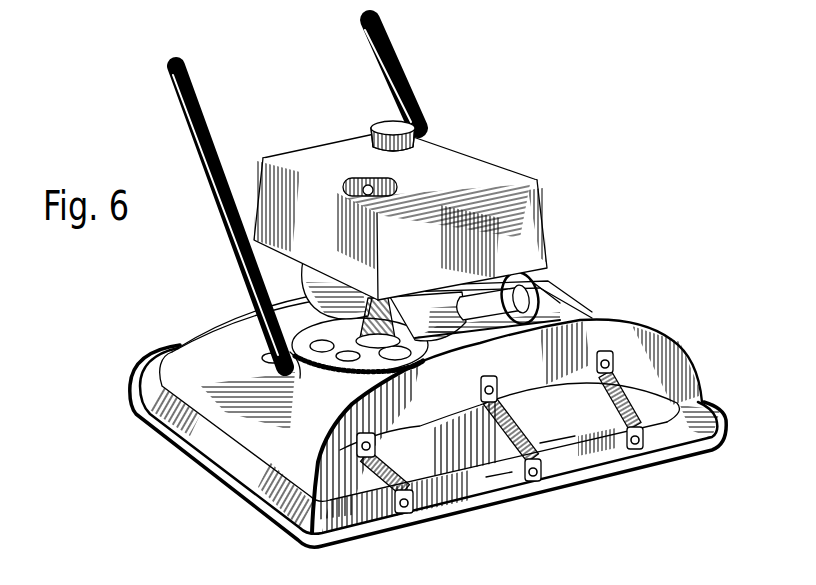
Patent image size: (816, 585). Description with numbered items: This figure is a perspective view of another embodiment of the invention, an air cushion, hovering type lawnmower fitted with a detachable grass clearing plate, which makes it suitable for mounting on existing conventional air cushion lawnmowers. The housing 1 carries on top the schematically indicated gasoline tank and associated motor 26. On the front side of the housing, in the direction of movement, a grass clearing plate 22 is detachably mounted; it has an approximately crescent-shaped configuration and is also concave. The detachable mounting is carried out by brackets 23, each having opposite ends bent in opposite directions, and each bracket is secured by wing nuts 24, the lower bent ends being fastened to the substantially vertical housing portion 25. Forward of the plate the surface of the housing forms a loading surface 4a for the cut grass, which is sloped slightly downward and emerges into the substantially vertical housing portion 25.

The housing 1 is at (235, 338).
The gasoline tank and associated motor 26 is at (488, 167).
The grass clearing plate 22 is at (640, 328).
The brackets 23 is at (607, 393).
The wing nuts 24 is at (483, 377).
The substantially vertical housing portion 25 is at (494, 479).
The loading surface 4a is at (547, 435).